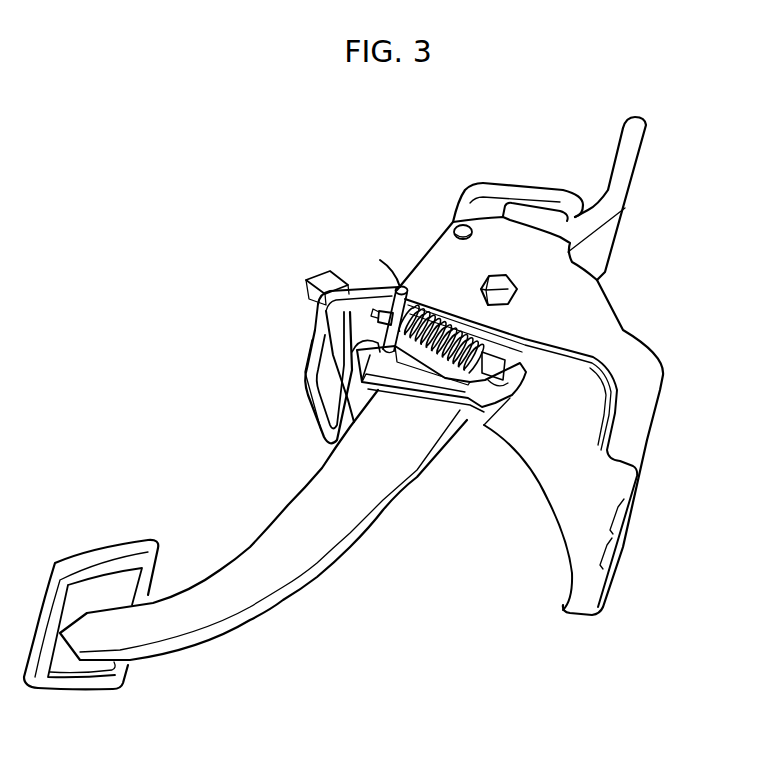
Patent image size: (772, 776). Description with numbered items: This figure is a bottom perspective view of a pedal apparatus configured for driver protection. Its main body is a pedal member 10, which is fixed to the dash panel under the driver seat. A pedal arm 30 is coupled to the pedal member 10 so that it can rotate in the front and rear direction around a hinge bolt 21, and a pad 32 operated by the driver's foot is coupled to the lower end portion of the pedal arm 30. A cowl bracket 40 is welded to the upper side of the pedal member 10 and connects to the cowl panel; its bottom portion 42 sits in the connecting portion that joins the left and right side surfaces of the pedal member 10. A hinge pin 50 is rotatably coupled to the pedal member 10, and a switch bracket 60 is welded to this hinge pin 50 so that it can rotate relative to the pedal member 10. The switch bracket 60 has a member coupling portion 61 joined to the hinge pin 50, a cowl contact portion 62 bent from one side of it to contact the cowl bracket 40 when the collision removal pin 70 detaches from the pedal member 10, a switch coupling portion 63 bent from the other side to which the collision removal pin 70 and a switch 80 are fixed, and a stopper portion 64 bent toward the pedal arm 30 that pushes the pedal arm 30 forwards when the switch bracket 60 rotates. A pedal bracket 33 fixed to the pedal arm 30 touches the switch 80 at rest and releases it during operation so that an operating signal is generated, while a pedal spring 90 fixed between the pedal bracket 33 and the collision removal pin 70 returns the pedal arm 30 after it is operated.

The pedal member 10 is at (640, 410).
The hinge bolt 21 is at (510, 291).
The pedal arm 30 is at (207, 617).
The pad 32 is at (103, 548).
The pedal bracket 33 is at (423, 390).
The cowl bracket 40 is at (630, 158).
The bottom portion 42 is at (528, 217).
The hinge pin 50 is at (461, 227).
The switch bracket 60 is at (292, 378).
The member coupling portion 61 is at (453, 222).
The cowl contact portion 62 is at (506, 190).
The switch coupling portion 63 is at (382, 308).
The stopper portion 64 is at (305, 400).
The collision removal pin 70 is at (399, 287).
The switch 80 is at (318, 276).
The pedal spring 90 is at (447, 413).